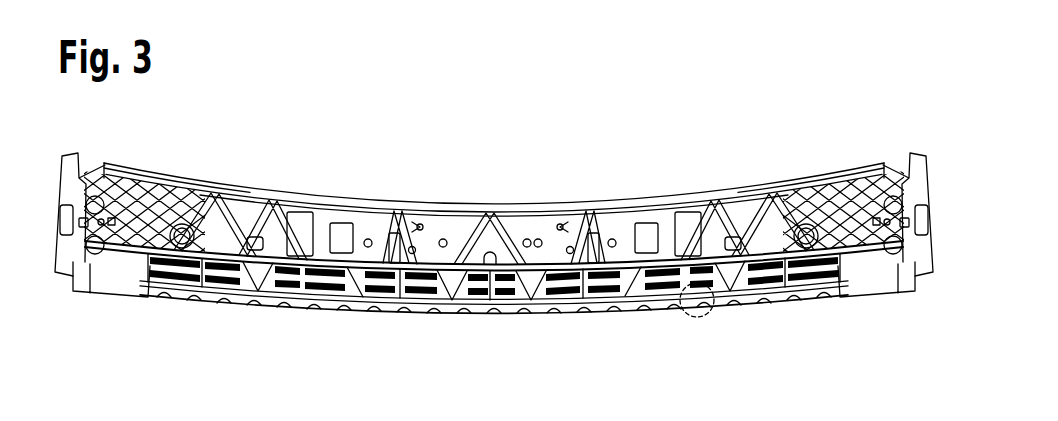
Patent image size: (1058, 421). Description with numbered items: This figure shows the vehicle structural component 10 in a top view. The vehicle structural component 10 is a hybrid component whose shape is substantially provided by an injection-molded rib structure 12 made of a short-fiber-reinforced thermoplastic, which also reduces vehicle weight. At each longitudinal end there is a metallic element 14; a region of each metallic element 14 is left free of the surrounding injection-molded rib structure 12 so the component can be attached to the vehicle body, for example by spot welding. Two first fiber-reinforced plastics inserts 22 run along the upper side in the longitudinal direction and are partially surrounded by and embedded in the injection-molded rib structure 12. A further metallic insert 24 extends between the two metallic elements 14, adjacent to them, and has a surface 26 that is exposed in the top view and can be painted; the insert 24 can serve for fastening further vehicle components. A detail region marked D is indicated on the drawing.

The vehicle structural component 10 is at (786, 138).
The injection-molded rib structure 12 is at (420, 283).
The metallic element 14 is at (57, 276).
The first fiber-reinforced plastics insert 22 is at (382, 268).
The insert 24 is at (245, 297).
The surface 26 is at (363, 303).
The detail region D is at (697, 318).